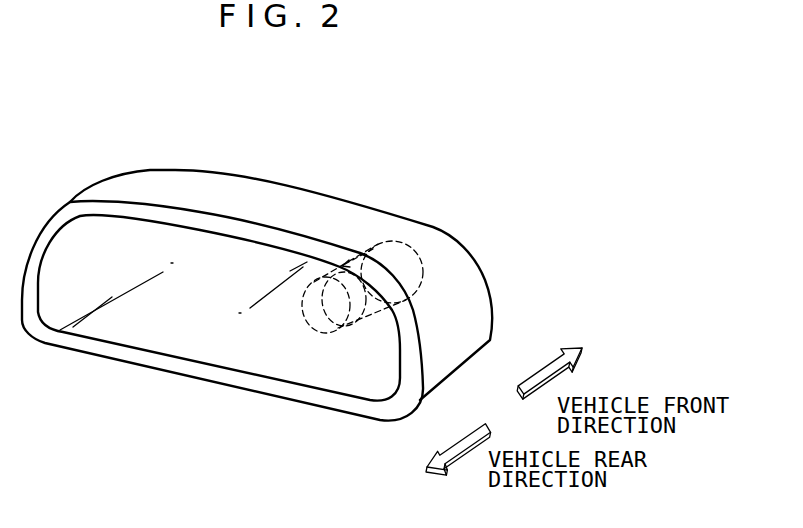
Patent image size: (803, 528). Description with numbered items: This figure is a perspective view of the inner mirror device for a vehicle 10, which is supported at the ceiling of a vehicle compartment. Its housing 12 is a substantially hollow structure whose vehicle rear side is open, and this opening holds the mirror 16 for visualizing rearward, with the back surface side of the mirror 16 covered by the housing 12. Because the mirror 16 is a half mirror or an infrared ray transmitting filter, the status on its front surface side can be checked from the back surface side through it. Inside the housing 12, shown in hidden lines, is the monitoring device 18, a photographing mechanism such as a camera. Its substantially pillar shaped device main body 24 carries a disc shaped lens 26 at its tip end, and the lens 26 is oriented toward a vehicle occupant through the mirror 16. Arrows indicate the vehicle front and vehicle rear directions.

The inner mirror device for a vehicle 10 is at (294, 121).
The housing 12 is at (213, 185).
The mirror 16 is at (158, 339).
The monitoring device 18 is at (372, 236).
The device main body 24 is at (424, 270).
The lens 26 is at (318, 318).